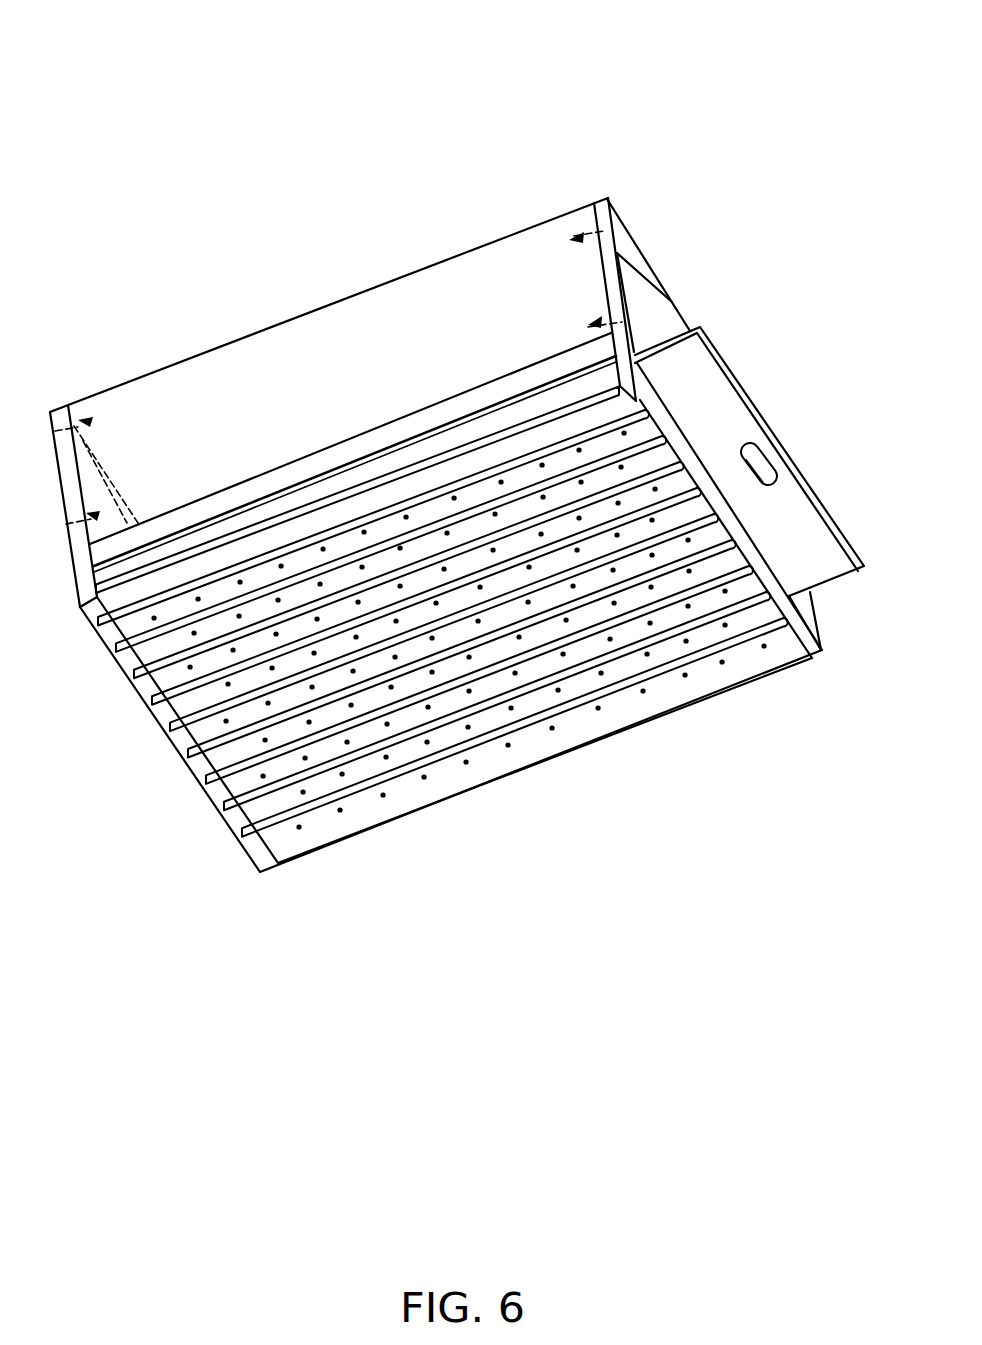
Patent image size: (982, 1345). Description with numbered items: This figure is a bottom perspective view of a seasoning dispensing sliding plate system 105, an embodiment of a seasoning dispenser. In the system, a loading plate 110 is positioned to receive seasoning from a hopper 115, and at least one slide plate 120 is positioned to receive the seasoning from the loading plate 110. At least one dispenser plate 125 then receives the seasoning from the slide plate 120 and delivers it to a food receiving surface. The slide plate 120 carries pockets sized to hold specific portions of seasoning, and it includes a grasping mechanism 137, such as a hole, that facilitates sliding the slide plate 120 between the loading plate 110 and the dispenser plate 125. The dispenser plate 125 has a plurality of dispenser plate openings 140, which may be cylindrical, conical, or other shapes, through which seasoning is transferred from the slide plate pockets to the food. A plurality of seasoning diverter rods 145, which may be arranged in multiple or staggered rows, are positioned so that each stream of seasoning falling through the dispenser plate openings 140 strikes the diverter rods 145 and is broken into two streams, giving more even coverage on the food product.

The seasoning dispensing sliding plate system 105 is at (227, 80).
The loading plate 110 is at (533, 378).
The hopper 115 is at (176, 399).
The slide plate 120 is at (357, 463).
The dispenser plate 125 is at (627, 633).
The grasping mechanism 137 is at (762, 462).
The dispenser plate openings 140 is at (421, 781).
The seasoning diverter rods 145 is at (567, 664).